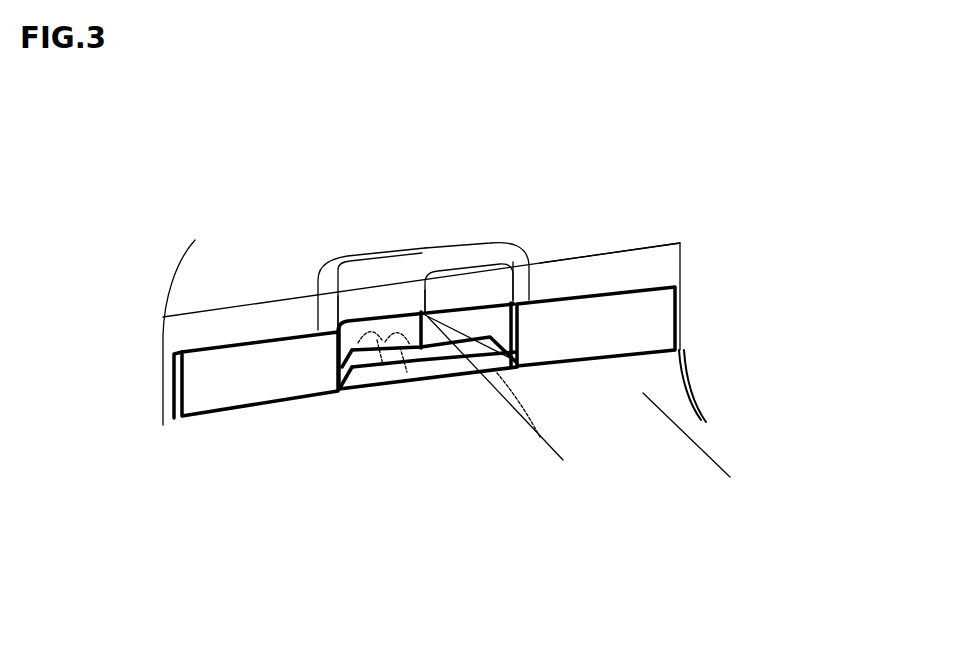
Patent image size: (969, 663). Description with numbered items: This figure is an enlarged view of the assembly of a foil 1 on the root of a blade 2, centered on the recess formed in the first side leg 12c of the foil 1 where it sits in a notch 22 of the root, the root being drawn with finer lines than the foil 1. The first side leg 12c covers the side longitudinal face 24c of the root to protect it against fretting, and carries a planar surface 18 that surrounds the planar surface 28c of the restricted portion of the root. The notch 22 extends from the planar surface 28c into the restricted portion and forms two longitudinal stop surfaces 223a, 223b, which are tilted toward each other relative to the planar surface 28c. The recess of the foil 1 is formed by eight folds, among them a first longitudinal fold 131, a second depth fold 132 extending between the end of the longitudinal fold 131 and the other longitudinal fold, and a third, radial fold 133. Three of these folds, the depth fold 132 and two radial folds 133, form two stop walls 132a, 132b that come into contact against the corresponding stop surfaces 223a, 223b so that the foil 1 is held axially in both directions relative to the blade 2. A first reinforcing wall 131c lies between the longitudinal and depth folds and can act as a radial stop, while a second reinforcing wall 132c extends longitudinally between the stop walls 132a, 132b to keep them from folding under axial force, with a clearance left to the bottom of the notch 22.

The foil 1 is at (675, 379).
The blade 2 is at (186, 279).
The first side leg 12c is at (708, 456).
The planar surface 18 is at (242, 372).
The notch 22 is at (513, 405).
The side longitudinal face 24c is at (627, 265).
The planar surface 28c is at (212, 323).
The first fold 131 is at (437, 332).
The first reinforcing wall 131c is at (387, 370).
The second depth fold 132 is at (497, 375).
The stop wall 132a is at (345, 380).
The stop wall 132b is at (487, 340).
The second reinforcing wall 132c is at (416, 303).
The third fold 133 is at (520, 330).
The stop surface 223a is at (345, 260).
The stop surface 223b is at (510, 256).